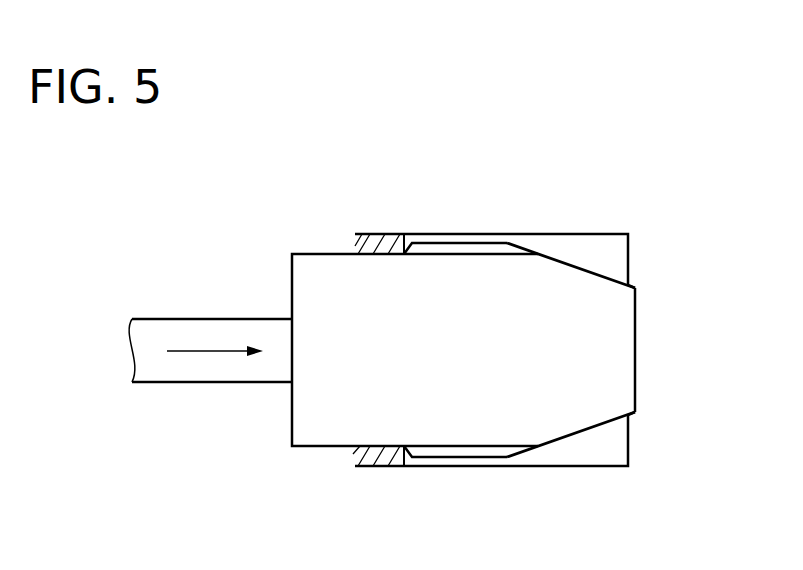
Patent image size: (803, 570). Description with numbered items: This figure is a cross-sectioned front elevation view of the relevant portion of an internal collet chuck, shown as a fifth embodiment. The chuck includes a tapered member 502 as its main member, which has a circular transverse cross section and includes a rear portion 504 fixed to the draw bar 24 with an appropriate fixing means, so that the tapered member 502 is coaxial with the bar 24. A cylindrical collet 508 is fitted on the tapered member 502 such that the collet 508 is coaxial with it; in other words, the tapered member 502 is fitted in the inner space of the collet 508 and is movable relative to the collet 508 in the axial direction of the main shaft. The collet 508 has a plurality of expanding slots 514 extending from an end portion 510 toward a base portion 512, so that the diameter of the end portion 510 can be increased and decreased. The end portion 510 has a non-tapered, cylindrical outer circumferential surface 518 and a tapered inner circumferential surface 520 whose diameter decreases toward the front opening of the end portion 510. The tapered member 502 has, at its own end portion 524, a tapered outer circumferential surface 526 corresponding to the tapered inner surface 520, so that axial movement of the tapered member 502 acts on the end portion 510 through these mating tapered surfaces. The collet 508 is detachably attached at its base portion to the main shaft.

The draw bar 24 is at (198, 368).
The tapered member 502 is at (384, 470).
The rear portion 504 is at (342, 395).
The cylindrical collet 508 is at (500, 218).
The end portion 510 is at (612, 252).
The base portion 512 is at (372, 245).
The expanding slots 514 is at (425, 243).
The non-tapered cylindrical outer circumferential surface 518 is at (595, 235).
The tapered inner circumferential surface 520 is at (597, 276).
The end portion 524 is at (565, 415).
The tapered outer circumferential surface 526 is at (617, 282).